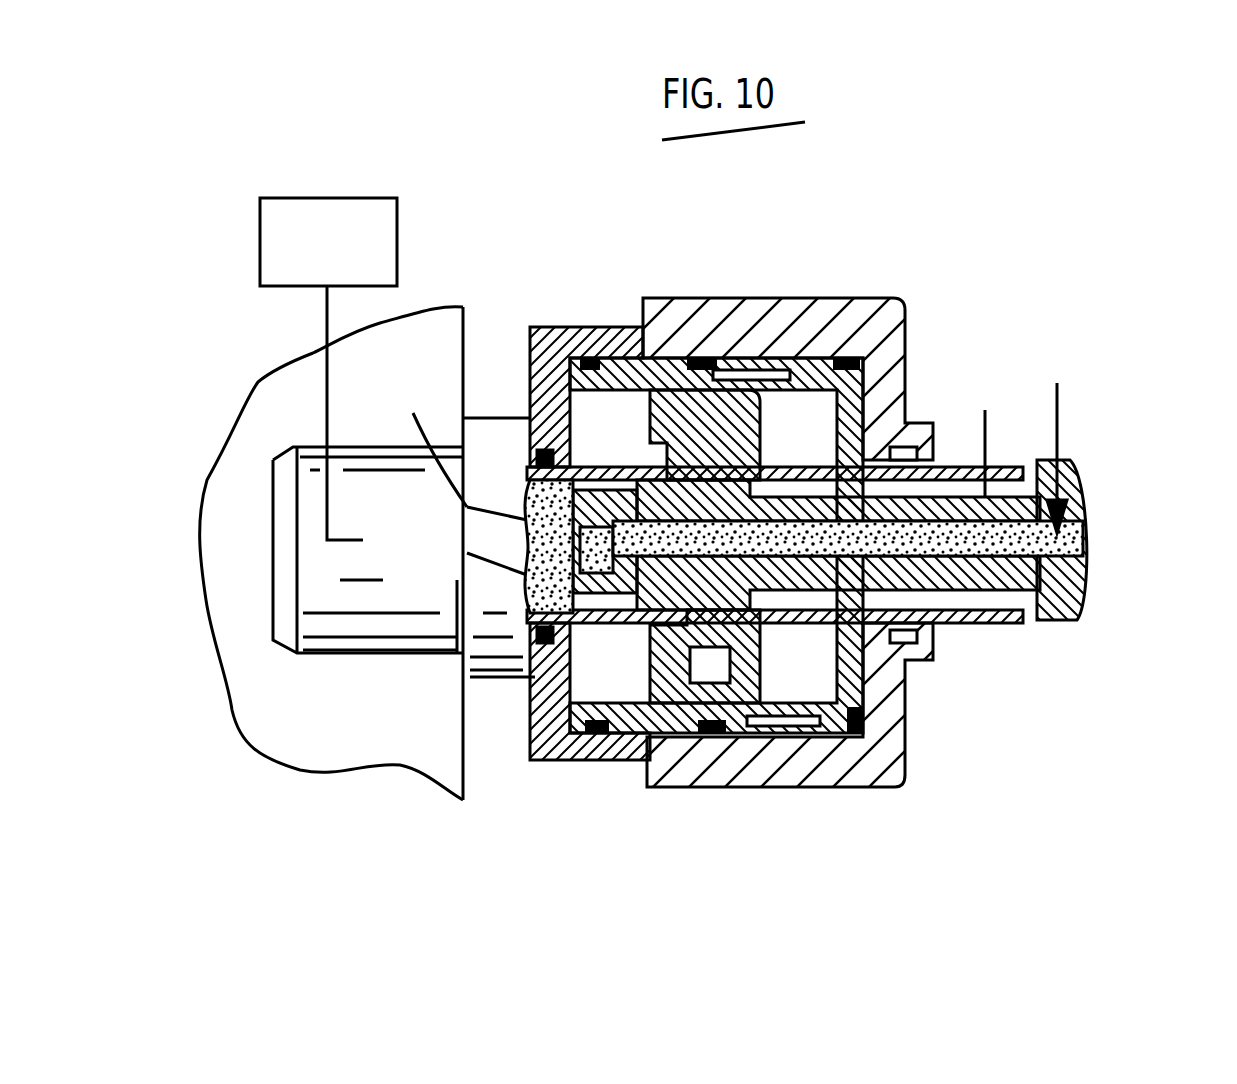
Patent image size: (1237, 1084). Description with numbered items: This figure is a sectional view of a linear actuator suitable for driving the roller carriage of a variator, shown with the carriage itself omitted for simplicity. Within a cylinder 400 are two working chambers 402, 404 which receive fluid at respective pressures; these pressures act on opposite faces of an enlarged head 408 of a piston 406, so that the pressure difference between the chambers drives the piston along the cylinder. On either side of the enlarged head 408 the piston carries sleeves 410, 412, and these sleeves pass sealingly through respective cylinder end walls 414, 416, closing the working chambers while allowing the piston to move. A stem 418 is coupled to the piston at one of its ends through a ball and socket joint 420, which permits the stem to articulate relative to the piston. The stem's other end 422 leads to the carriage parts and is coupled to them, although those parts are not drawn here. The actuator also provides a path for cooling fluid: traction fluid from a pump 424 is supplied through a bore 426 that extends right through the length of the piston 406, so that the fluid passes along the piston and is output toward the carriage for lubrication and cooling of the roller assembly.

The cylinder 400 is at (908, 748).
The working chamber 402 is at (625, 405).
The working chamber 404 is at (808, 413).
The piston 406 is at (775, 675).
The enlarged head 408 is at (583, 640).
The sleeve 410 is at (593, 455).
The sleeve 412 is at (778, 455).
The cylinder end wall 414 is at (543, 752).
The cylinder end wall 416 is at (880, 783).
The stem 418 is at (1000, 533).
The ball and socket joint 420 is at (697, 637).
The other end of stem 422 is at (1085, 540).
The pump 424 is at (397, 238).
The bore 426 is at (963, 590).